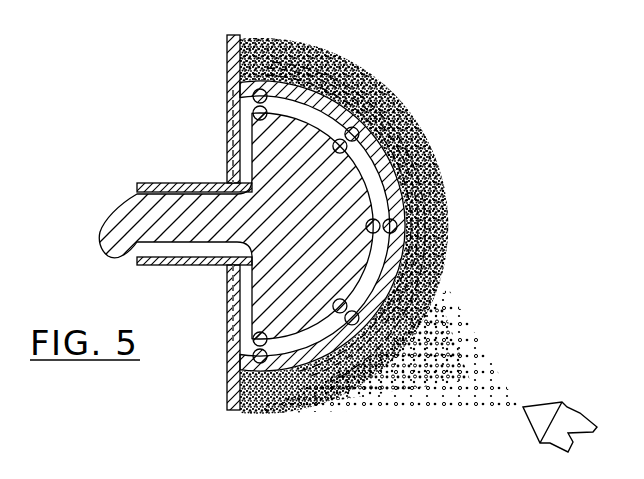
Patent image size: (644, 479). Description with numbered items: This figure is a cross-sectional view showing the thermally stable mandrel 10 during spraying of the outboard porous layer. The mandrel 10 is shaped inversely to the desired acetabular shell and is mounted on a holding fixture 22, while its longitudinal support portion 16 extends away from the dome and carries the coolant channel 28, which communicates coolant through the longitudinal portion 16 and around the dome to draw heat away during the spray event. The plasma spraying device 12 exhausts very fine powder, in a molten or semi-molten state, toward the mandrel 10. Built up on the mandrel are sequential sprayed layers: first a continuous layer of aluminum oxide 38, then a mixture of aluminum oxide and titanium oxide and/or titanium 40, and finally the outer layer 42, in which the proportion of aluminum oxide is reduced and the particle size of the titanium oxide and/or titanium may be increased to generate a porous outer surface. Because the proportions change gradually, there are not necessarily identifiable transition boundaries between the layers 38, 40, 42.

The thermally stable mandrel 10 is at (437, 226).
The plasma spraying device 12 is at (556, 420).
The longitudinal support portion 16 is at (170, 182).
The holding fixture 22 is at (233, 60).
The coolant channel 28 is at (143, 246).
The aluminum oxide 38 is at (348, 66).
The mixture of aluminum oxide and titanium oxide and/or titanium 40 is at (393, 92).
The outboard porous layer 42 is at (447, 155).